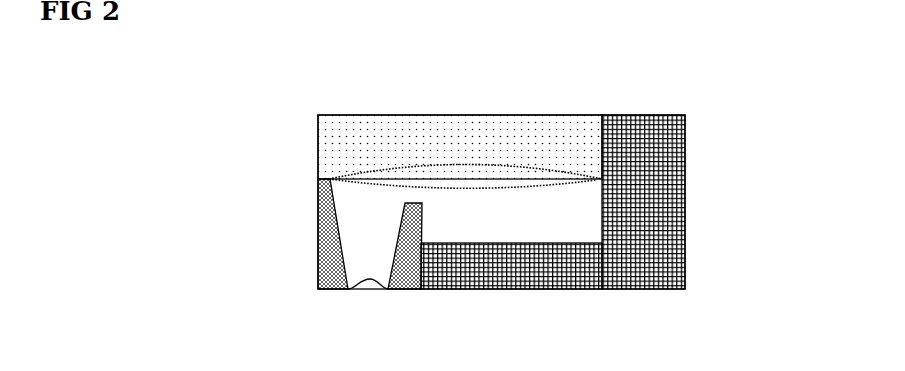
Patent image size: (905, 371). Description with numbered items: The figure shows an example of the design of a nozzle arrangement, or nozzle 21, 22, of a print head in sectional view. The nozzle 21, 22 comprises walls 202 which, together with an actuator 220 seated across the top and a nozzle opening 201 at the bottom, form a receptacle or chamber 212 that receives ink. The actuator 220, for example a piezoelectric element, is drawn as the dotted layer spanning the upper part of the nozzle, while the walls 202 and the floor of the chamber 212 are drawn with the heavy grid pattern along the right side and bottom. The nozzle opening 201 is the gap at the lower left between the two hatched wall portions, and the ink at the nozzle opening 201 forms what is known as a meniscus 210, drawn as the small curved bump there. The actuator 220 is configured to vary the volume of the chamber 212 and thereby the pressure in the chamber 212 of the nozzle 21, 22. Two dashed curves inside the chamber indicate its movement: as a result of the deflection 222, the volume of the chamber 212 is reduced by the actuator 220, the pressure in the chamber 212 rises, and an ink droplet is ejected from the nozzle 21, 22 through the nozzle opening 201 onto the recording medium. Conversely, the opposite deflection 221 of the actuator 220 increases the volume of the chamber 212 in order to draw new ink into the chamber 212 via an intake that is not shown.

The nozzle 21 is at (464, 203).
The nozzle 22 is at (283, 172).
The actuator 220 is at (472, 120).
The deflection 221 is at (400, 166).
The deflection 222 is at (527, 184).
The walls 202 is at (677, 188).
The chamber 212 is at (513, 229).
The nozzle opening 201 is at (330, 265).
The meniscus 210 is at (368, 282).